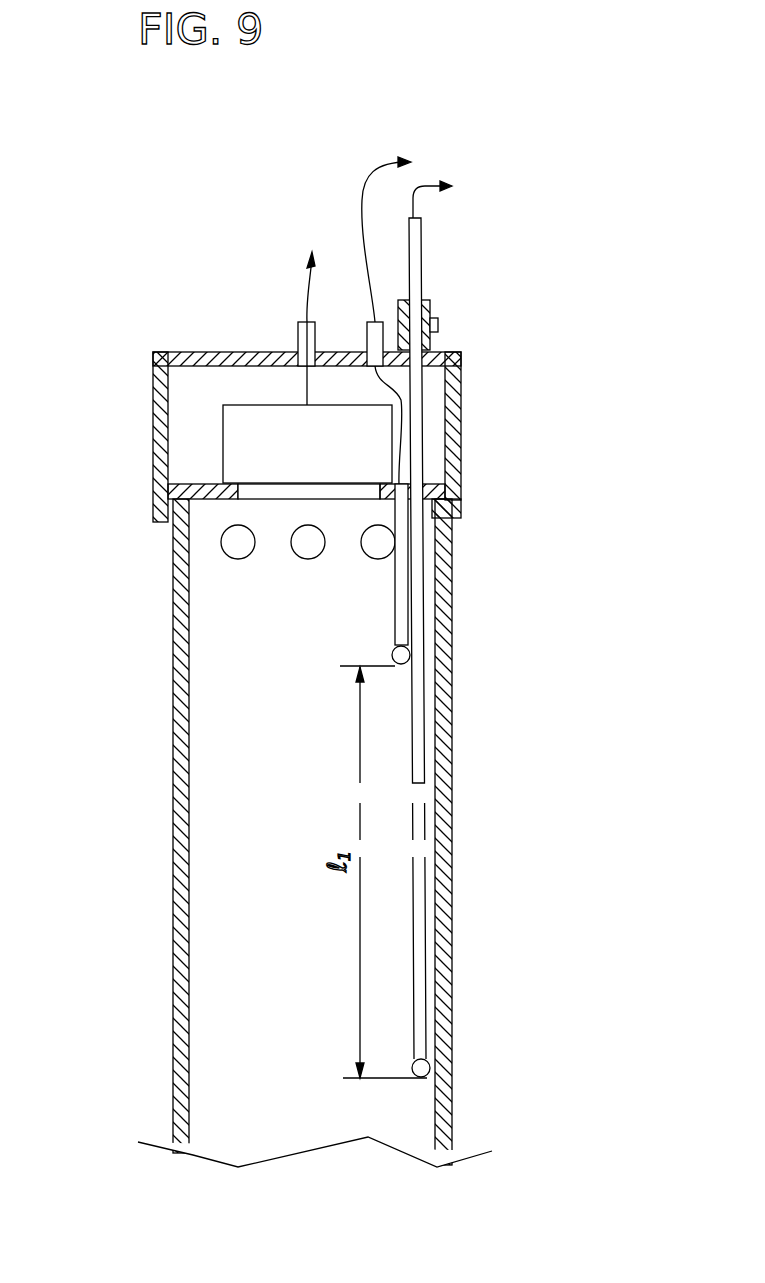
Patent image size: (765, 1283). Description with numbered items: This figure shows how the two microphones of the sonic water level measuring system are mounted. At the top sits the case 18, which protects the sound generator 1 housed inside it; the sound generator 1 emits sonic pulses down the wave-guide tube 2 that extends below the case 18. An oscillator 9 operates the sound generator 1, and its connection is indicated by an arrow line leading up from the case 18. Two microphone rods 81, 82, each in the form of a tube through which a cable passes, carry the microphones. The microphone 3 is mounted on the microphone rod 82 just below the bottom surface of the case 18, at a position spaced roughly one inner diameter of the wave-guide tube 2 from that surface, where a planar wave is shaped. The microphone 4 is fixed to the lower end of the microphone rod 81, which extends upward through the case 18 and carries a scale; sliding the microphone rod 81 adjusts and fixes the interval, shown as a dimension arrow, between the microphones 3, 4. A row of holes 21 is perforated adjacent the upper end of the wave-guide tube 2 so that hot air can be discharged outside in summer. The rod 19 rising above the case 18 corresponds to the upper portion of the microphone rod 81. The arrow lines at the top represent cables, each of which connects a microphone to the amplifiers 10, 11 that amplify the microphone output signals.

The sound generator 1 is at (228, 441).
The wave-guide tube 2 is at (450, 853).
The microphone 3 is at (393, 652).
The microphone 4 is at (423, 1069).
The microphone rod 81 is at (417, 733).
The microphone rod 82 is at (395, 603).
The oscillator 9 is at (312, 310).
The amplifier 10 is at (455, 195).
The amplifier 11 is at (410, 311).
The case 18 is at (153, 360).
The support tube 19 is at (413, 258).
The holes 21 is at (233, 541).